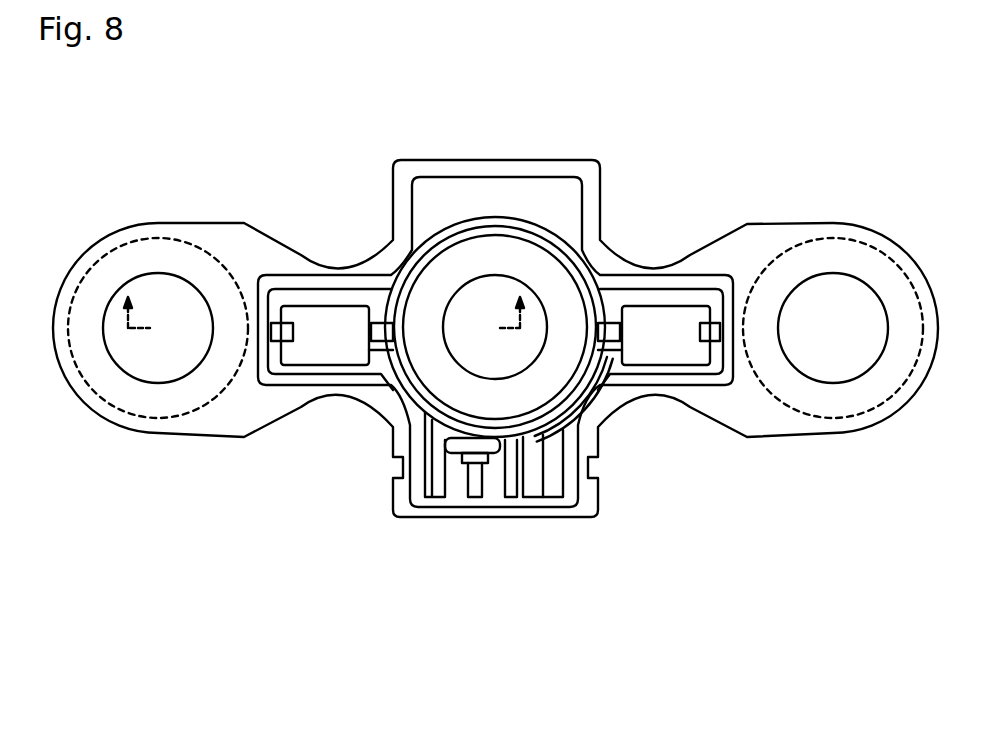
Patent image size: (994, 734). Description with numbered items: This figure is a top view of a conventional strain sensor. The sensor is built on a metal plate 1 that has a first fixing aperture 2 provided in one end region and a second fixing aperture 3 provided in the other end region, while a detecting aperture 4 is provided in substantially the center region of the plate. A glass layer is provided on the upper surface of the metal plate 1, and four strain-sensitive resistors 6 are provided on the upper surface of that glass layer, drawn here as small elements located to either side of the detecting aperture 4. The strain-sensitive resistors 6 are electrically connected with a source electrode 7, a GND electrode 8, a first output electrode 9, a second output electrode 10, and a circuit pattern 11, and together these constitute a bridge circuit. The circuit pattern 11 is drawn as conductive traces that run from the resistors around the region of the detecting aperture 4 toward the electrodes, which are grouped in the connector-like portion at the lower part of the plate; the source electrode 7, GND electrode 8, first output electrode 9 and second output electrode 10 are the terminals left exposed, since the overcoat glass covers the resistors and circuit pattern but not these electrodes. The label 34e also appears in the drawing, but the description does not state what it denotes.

The metal plate 1 is at (758, 415).
The first fixing aperture 2 is at (160, 383).
The second fixing aperture 3 is at (808, 285).
The detecting aperture 4 is at (496, 275).
The strain-sensitive resistors 6 is at (282, 322).
The source electrode 7 is at (477, 498).
The GND electrode 8 is at (557, 493).
The first output electrode 9 is at (430, 493).
The second output electrode 10 is at (516, 493).
The circuit pattern 11 is at (447, 222).
The connecting web 34e is at (463, 456).